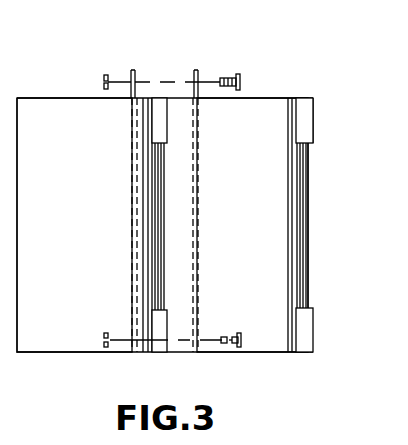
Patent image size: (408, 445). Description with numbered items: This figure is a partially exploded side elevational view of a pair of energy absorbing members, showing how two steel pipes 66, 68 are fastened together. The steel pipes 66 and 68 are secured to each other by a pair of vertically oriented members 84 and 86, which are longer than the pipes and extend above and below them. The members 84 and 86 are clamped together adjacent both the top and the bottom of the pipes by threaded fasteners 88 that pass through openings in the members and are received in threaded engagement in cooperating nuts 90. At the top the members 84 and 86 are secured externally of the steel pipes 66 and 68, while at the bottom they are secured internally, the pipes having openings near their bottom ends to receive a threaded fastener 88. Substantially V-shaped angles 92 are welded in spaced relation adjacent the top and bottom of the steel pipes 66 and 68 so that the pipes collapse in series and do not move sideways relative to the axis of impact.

The steel pipe 66 is at (253, 221).
The steel pipe 68 is at (98, 223).
The vertically oriented member 84 is at (198, 72).
The vertically oriented member 86 is at (136, 72).
The threaded fastener 88 is at (240, 80).
The nut 90 is at (104, 78).
The angle 92 is at (165, 120).